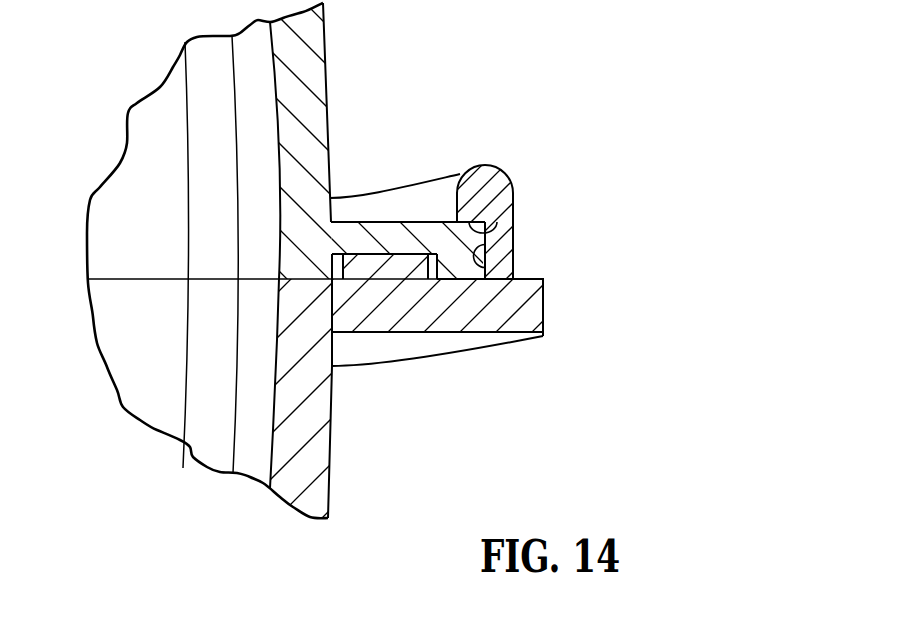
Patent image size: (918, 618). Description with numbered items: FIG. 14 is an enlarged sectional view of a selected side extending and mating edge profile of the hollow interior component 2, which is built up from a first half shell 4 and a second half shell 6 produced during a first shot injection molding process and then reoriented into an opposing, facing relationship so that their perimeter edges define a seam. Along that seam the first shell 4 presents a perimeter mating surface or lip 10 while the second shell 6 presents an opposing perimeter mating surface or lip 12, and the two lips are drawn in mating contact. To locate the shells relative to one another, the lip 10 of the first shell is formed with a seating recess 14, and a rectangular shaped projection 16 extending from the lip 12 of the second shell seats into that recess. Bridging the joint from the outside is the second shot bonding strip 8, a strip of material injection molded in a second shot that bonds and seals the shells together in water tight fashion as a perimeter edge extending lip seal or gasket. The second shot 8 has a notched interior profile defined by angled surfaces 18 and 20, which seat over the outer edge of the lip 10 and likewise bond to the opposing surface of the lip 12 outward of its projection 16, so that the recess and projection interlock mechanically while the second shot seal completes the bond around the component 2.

The component 2 is at (550, 373).
The first half shell 4 is at (320, 118).
The second half shell 6 is at (320, 412).
The second shot bonding strip 8 is at (514, 195).
The perimeter mating surface of first shell 10 is at (387, 227).
The perimeter mating surface of second shell 12 is at (465, 313).
The seating recess 14 is at (333, 264).
The rectangular shaped projection 16 is at (373, 263).
The angled surface 18 is at (486, 270).
The angled surface 20 is at (492, 232).